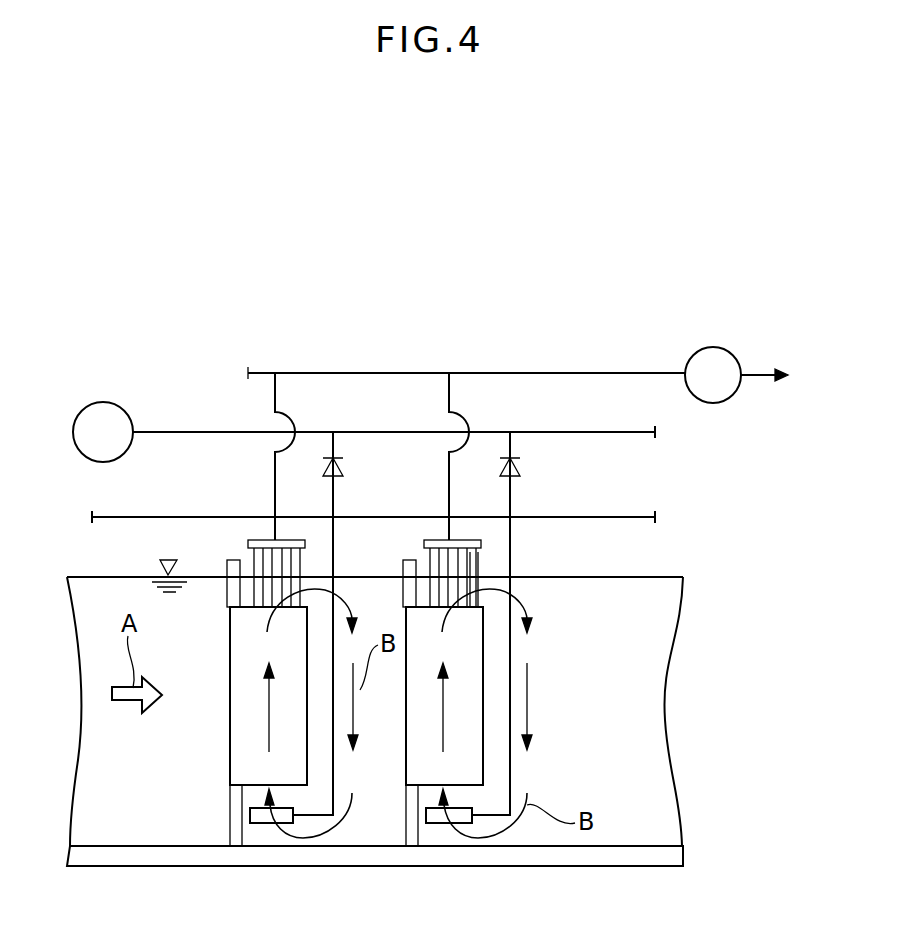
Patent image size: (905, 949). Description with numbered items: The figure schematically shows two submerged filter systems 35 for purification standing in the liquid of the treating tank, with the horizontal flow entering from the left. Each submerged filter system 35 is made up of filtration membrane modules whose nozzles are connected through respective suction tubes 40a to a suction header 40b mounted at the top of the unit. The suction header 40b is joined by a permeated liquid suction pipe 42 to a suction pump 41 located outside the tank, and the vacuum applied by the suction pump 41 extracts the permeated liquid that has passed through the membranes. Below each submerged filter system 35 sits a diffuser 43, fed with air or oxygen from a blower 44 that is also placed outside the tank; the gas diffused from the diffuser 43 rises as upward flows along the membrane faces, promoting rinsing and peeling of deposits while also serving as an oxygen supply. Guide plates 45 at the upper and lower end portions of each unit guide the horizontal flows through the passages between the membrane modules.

The submerged filter system 35 is at (504, 652).
The suction tube 40a is at (478, 568).
The suction header 40b is at (263, 540).
The suction pump 41 is at (718, 348).
The permeated liquid suction pipe 42 is at (480, 373).
The diffuser 43 is at (267, 823).
The blower 44 is at (107, 402).
The guide plate 45 is at (224, 583).